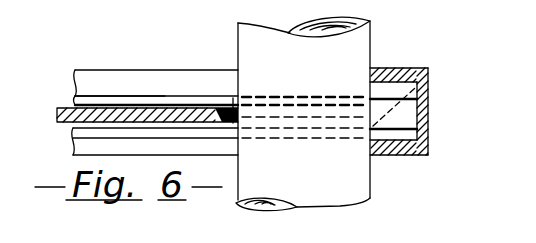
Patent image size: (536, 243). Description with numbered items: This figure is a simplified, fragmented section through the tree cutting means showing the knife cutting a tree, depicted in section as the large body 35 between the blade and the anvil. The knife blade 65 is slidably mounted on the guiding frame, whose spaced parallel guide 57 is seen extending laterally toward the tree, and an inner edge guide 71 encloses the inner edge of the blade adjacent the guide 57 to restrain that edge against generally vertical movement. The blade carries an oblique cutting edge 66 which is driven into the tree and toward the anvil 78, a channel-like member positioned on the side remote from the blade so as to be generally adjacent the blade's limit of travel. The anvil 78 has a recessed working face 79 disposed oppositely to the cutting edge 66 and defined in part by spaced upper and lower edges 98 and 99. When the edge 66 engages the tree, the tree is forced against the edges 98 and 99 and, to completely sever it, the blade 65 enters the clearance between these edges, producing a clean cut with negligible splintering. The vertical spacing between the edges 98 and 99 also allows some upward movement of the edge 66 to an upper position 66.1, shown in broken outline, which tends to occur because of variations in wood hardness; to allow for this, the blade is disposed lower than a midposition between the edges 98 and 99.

The cylindrical housing 35 is at (367, 40).
The guide 57 is at (113, 74).
The knife blade 65 is at (135, 112).
The cutting edge 66 is at (229, 107).
The upper position 66.1 is at (433, 74).
The inner edge guide 71 is at (165, 98).
The anvil 78 is at (433, 108).
The recessed working face 79 is at (371, 137).
The upper edge 98 is at (371, 70).
The lower edge 99 is at (370, 140).